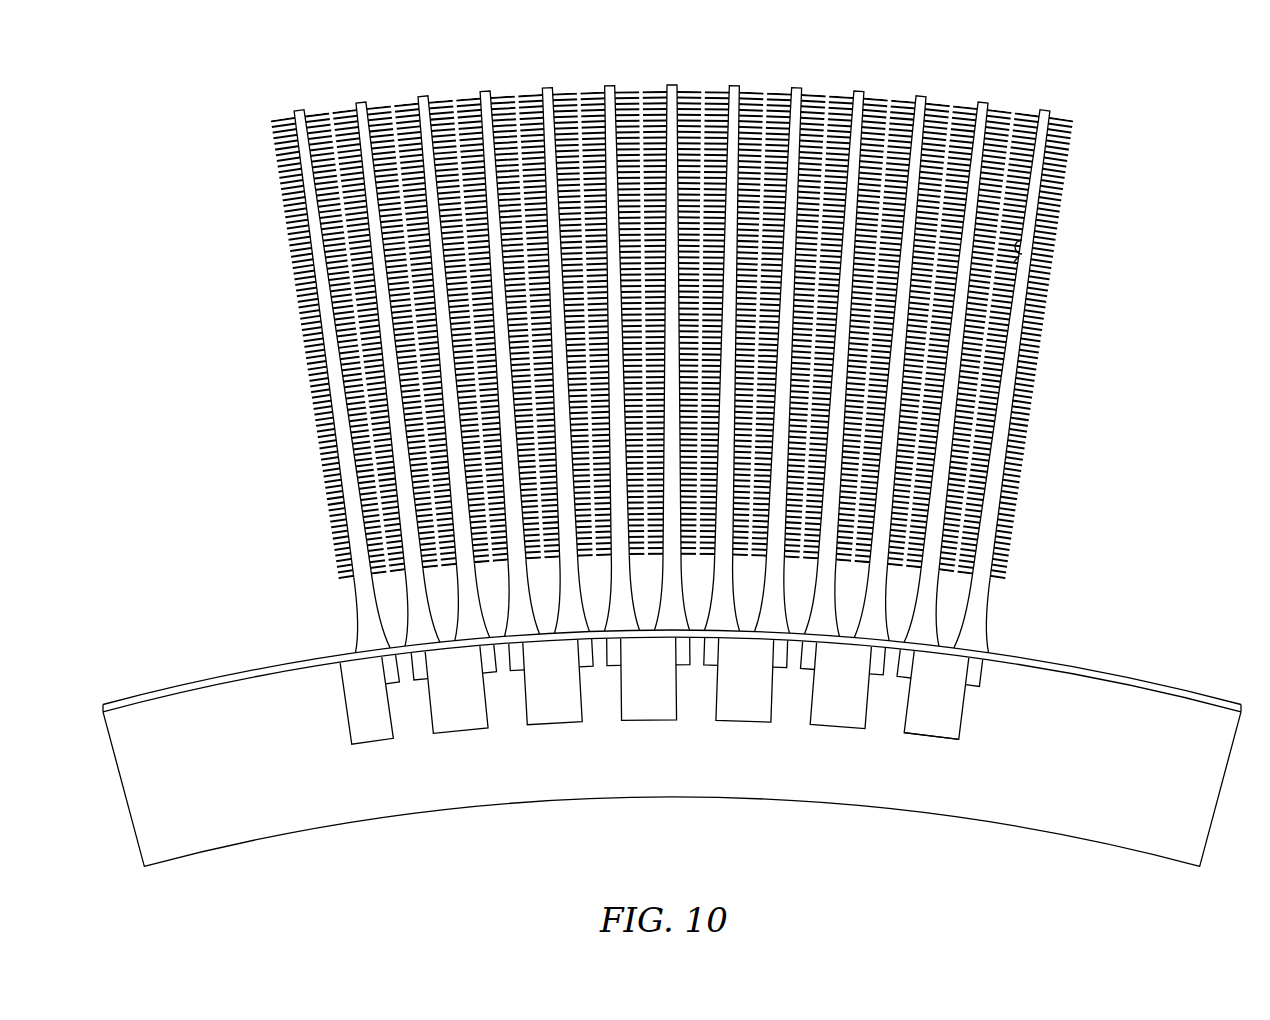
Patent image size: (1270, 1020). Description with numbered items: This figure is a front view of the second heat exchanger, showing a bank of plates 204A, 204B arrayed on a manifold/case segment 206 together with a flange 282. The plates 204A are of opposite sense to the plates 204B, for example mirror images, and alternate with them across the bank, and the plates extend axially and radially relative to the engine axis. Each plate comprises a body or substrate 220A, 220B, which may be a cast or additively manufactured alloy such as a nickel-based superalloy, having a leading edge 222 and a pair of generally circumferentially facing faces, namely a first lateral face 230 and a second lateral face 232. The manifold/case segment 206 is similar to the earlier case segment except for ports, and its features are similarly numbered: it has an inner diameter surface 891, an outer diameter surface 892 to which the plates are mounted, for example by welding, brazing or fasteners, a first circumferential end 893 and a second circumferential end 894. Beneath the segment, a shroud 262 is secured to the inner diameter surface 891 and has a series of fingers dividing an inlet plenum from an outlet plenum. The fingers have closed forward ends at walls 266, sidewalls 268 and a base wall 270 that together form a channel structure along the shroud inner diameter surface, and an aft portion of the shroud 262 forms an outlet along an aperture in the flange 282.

The plate 204A is at (302, 100).
The plate 204B is at (367, 95).
The body or substrate 220A is at (987, 551).
The body or substrate 220B is at (934, 574).
The leading edge 222 is at (1015, 352).
The first lateral face 230 is at (1019, 262).
The second lateral face 232 is at (1024, 247).
The manifold/case segment 206 is at (667, 674).
The inner diameter surface 891 is at (200, 712).
The outer diameter surface 892 is at (208, 680).
The first circumferential end 893 is at (1241, 708).
The second circumferential end 894 is at (103, 708).
The wall 266 is at (648, 696).
The sidewall 268 is at (975, 712).
The shroud 262 is at (935, 750).
The base wall 270 is at (839, 728).
The flange 282 is at (1100, 812).